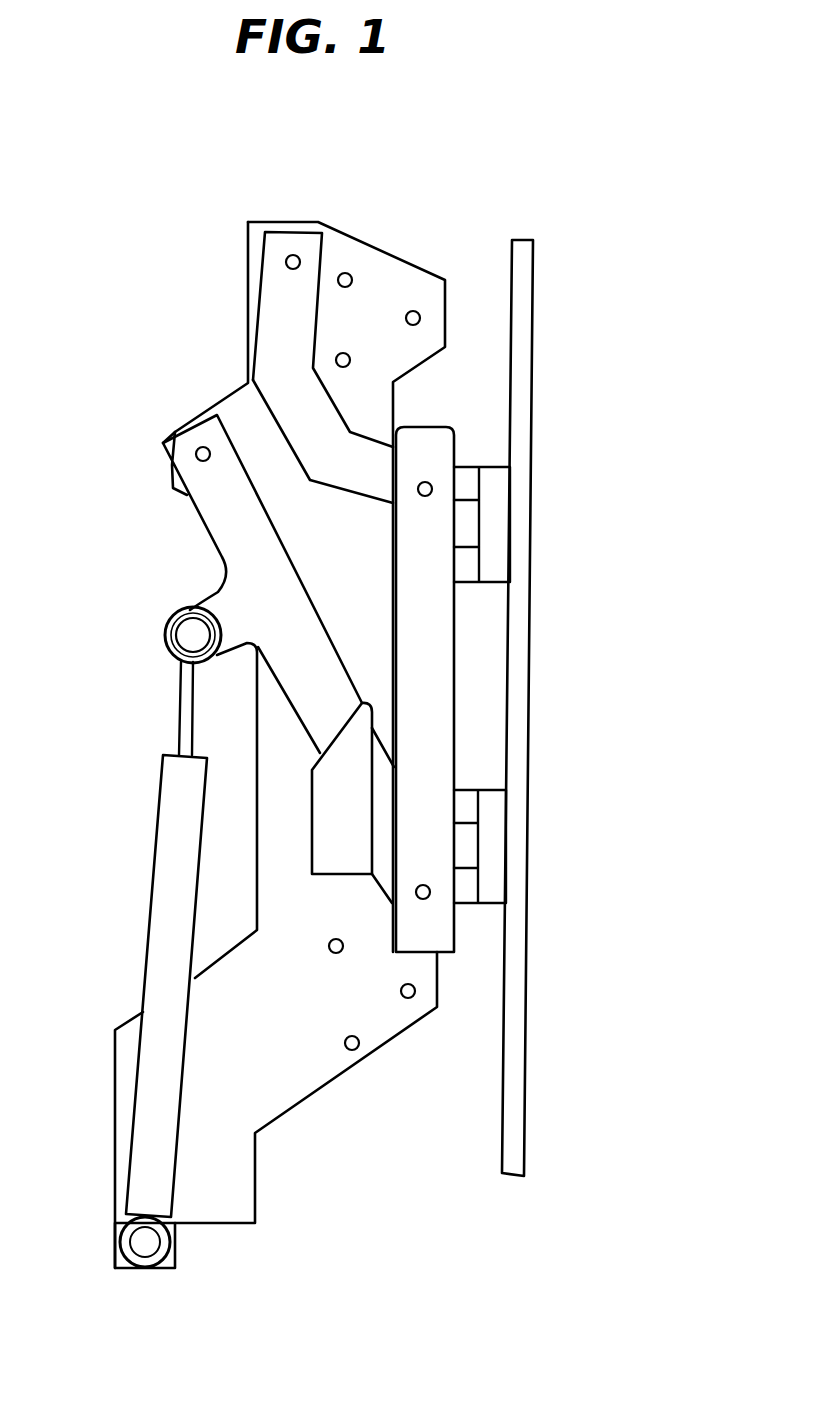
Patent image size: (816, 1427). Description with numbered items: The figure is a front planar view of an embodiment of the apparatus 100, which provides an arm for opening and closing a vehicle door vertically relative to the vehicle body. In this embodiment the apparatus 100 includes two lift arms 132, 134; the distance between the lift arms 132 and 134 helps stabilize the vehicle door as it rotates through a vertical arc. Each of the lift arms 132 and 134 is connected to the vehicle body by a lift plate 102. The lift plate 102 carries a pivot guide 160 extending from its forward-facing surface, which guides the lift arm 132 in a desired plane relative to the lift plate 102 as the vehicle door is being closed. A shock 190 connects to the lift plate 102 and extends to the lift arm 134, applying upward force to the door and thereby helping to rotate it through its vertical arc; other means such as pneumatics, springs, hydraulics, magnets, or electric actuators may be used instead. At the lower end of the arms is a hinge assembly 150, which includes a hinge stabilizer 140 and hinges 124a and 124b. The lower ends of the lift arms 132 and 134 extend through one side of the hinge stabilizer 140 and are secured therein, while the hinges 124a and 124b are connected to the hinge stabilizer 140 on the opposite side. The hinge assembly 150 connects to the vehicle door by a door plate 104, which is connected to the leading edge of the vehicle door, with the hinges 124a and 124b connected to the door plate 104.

The apparatus 100 is at (96, 222).
The lift plate 102 is at (235, 400).
The door plate 104 is at (520, 342).
The hinge 124a is at (480, 528).
The hinge 124b is at (480, 848).
The lift arm 132 is at (277, 296).
The lift arm 134 is at (233, 527).
The hinge stabilizer 140 is at (422, 708).
The hinge assembly 150 is at (492, 404).
The pivot guide 160 is at (337, 848).
The shock 190 is at (177, 857).